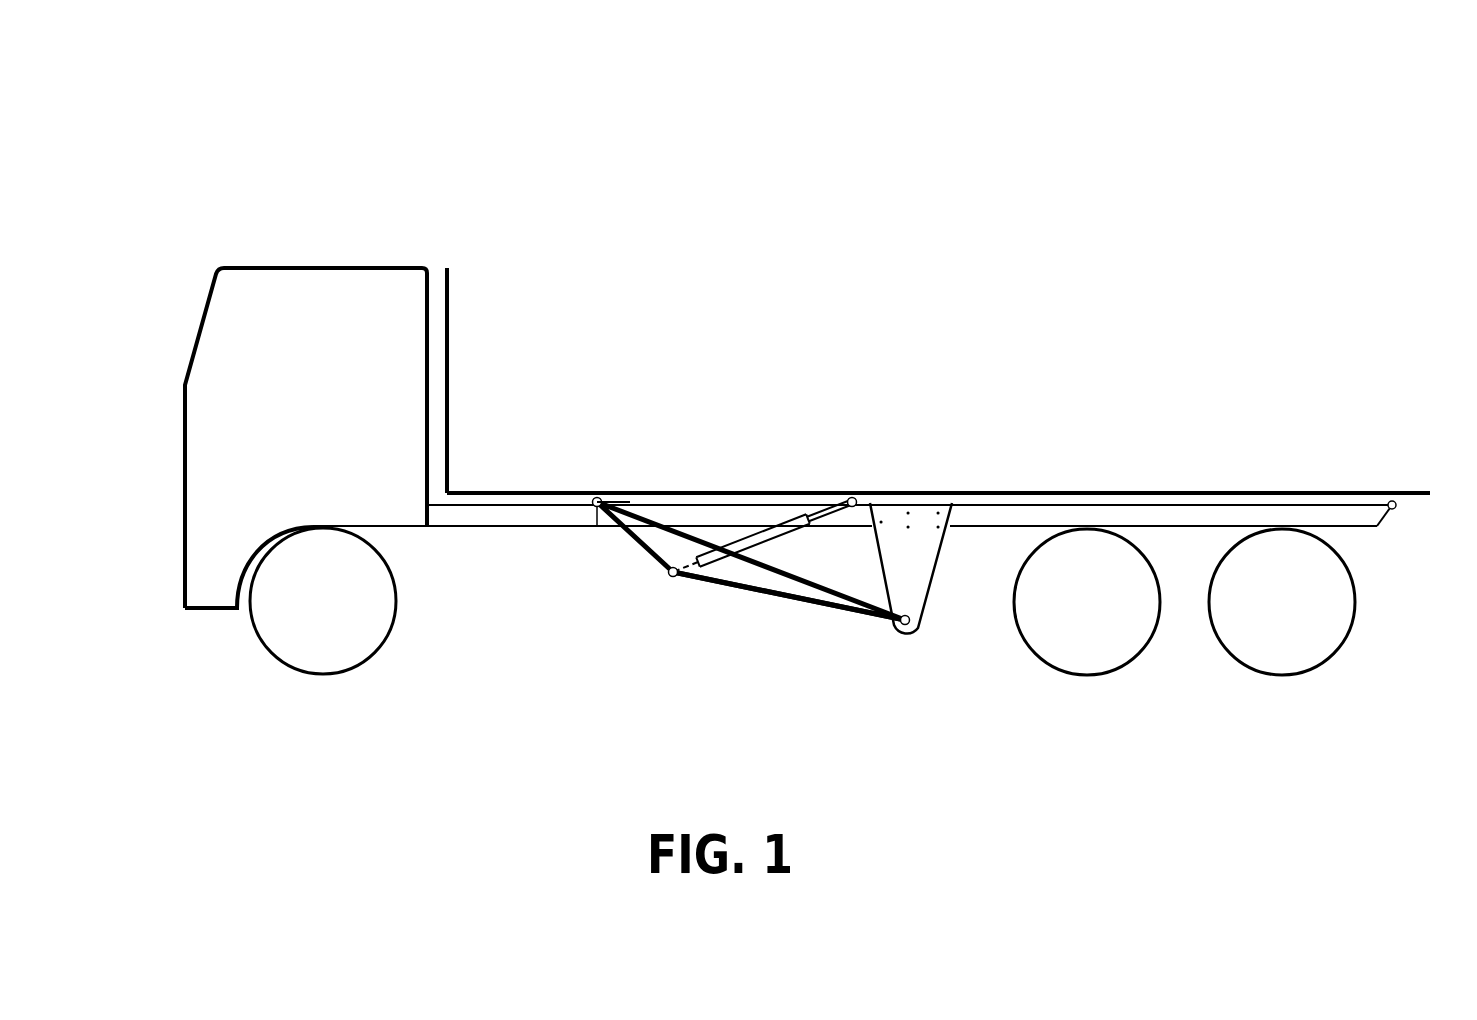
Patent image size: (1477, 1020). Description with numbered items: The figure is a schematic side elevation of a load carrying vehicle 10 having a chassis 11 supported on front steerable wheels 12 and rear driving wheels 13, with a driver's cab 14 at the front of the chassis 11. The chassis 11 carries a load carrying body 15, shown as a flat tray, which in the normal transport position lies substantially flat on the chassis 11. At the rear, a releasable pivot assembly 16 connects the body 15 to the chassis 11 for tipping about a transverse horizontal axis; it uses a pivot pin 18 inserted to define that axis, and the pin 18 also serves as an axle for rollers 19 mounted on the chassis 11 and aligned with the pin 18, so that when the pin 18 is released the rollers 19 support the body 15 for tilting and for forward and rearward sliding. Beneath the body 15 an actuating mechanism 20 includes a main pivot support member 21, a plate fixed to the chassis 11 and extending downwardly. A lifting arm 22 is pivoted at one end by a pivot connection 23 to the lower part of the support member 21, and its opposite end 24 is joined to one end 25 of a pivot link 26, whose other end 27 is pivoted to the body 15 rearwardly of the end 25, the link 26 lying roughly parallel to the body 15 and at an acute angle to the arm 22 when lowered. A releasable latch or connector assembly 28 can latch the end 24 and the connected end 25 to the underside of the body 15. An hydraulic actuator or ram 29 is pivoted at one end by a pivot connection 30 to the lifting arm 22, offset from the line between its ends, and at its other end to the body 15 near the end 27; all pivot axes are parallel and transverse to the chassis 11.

The load carrying vehicle 10 is at (960, 255).
The chassis 11 is at (519, 545).
The front steerable wheels 12 is at (238, 686).
The rear driving wheels 13 is at (1157, 690).
The driver's cab 14 is at (315, 247).
The load carrying body 15 is at (1125, 475).
The releasable pivot assembly 16 is at (1387, 545).
The pivot pin 18 is at (1397, 510).
The rollers 19 is at (1391, 498).
The actuating mechanism 20 is at (738, 622).
The main pivot support member 21 is at (925, 592).
The lifting arm 22 is at (795, 597).
The pivot connection 23 is at (909, 632).
The end of lifting arm 24 is at (596, 484).
The end of pivot link 25 is at (628, 493).
The pivot link 26 is at (714, 493).
The end of pivot link 27 is at (851, 496).
The releasable latch or connector assembly 28 is at (590, 536).
The hydraulic actuator or ram 29 is at (769, 521).
The pivot connection 30 is at (671, 580).